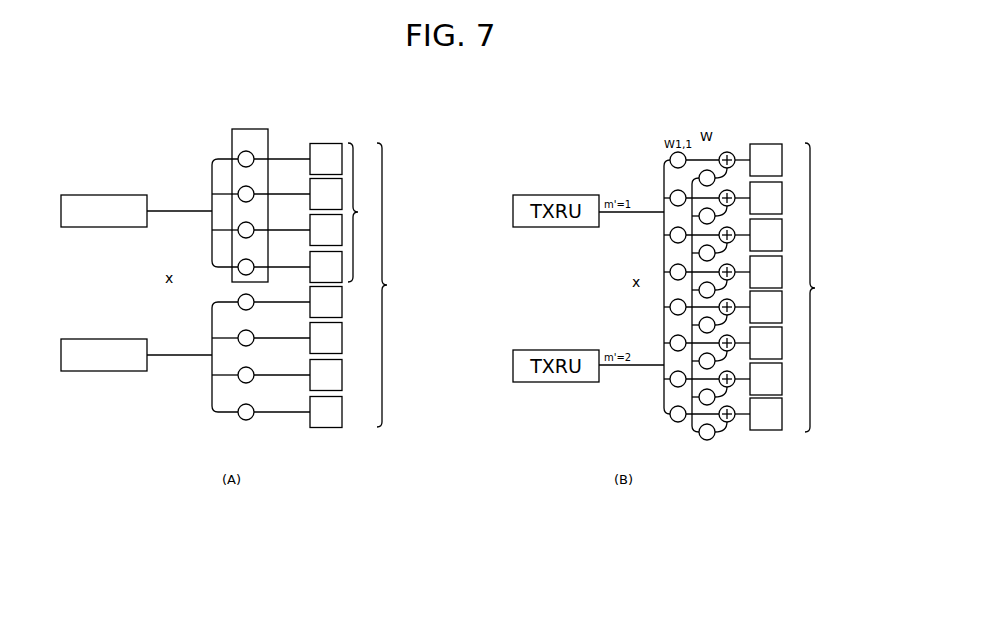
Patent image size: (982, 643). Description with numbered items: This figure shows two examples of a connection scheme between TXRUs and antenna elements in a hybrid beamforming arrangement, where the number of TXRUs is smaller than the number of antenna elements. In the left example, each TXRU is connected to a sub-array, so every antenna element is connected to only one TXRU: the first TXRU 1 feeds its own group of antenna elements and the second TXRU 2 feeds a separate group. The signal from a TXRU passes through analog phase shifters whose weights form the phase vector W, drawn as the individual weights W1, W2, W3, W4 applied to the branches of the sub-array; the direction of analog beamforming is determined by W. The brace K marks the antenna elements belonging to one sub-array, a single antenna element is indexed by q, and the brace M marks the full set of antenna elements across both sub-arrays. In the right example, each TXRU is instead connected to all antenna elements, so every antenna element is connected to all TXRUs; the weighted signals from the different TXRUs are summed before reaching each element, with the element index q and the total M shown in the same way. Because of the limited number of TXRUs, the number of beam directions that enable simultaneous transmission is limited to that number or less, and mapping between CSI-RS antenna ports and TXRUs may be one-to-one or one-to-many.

The TXRU (m'=1) with input line 1 is at (136, 211).
The TXRU (m'=2) with input line 2 is at (136, 355).
The phase vector W is at (239, 204).
The weight W1 multiplier W1 is at (246, 152).
The weight W2 multiplier W2 is at (246, 187).
The weight W3 multiplier W3 is at (246, 223).
The weight W4 multiplier W4 is at (246, 260).
The number K of antenna elements per TXRU (brace) K is at (358, 212).
The antenna element index q is at (581, 284).
The total number M of antenna elements (brace) M is at (603, 287).